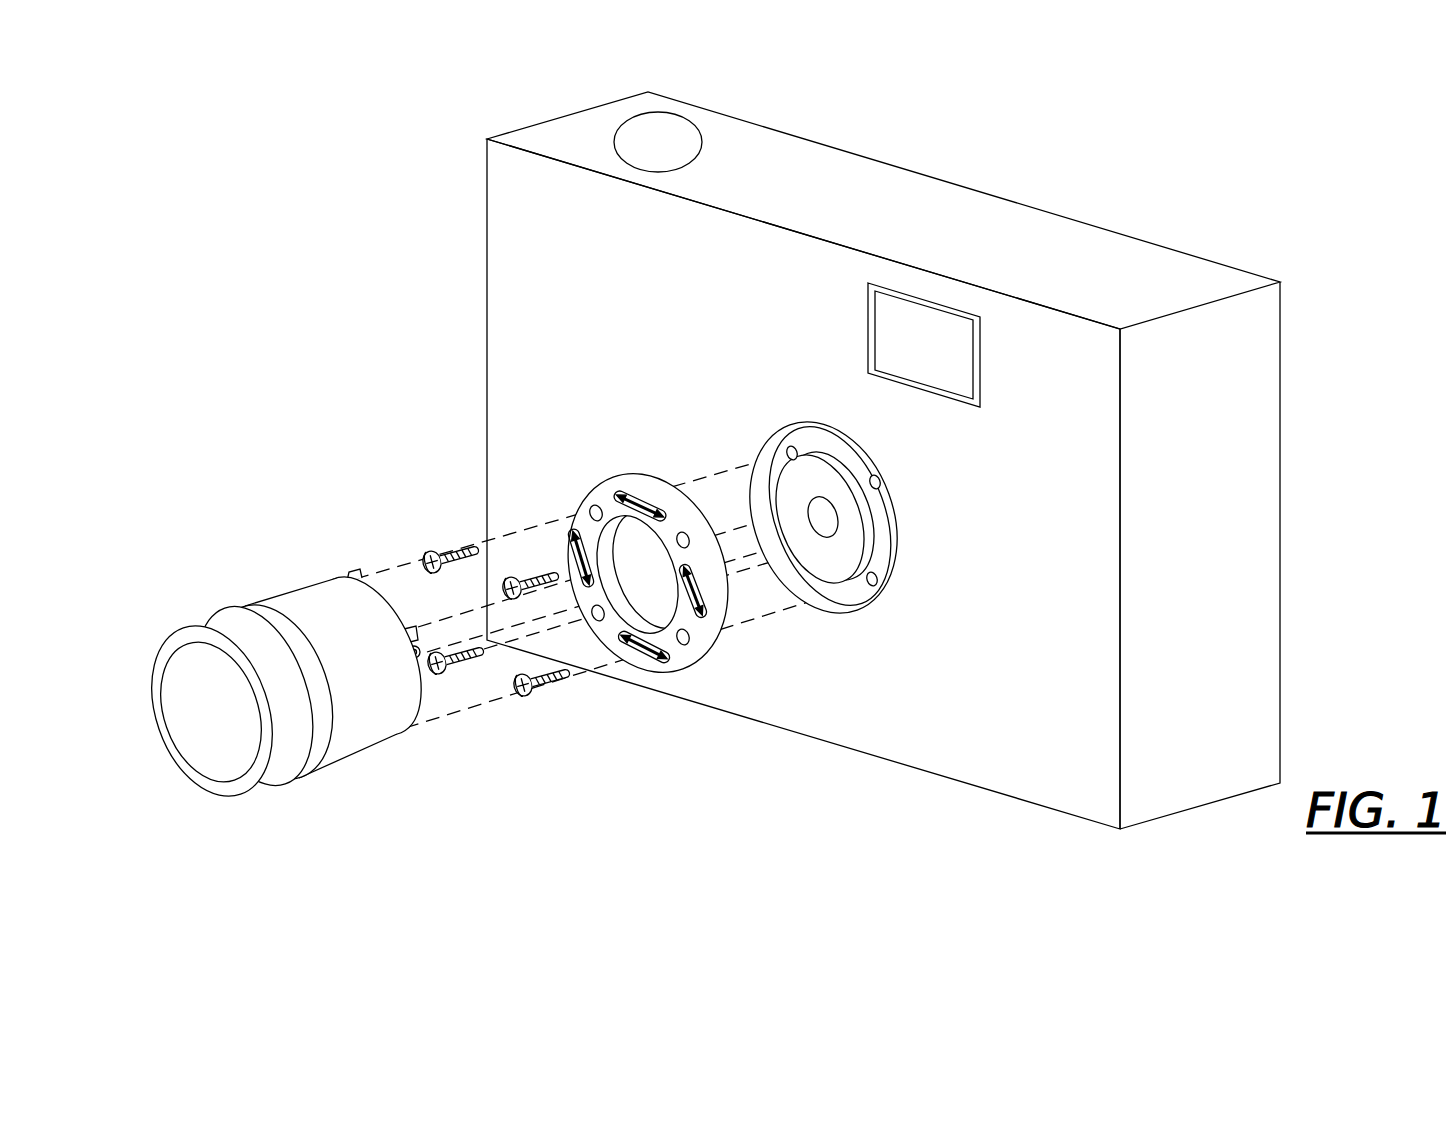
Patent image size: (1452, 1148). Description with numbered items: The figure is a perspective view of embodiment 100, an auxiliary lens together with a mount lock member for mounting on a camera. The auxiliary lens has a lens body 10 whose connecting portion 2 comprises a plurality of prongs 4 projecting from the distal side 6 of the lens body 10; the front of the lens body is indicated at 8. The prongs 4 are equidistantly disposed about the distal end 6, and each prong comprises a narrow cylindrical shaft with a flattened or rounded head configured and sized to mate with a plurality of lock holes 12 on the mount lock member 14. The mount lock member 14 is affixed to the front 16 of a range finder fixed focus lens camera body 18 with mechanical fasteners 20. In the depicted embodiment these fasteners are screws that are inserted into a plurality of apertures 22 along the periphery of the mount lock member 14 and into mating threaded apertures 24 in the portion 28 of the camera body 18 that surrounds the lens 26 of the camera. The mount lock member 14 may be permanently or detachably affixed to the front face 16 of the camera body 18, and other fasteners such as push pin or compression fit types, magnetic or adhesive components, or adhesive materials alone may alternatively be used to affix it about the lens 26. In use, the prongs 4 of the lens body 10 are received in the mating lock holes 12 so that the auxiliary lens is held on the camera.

The embodiment 100 is at (276, 687).
The connecting portion 2 is at (286, 692).
The prongs 4 is at (357, 579).
The distal side 6 is at (400, 758).
The front lens ring 8 is at (260, 804).
The lens body 10 is at (292, 598).
The lock holes 12 is at (642, 499).
The mount lock member 14 is at (665, 561).
The front face of camera body 16 is at (903, 755).
The camera body 18 is at (940, 460).
The mechanical fasteners 20 is at (521, 573).
The apertures 22 is at (594, 506).
The threaded apertures 24 is at (788, 450).
The lens of the camera 26 is at (848, 511).
The portion of the camera body surrounding the lens 28 is at (830, 516).